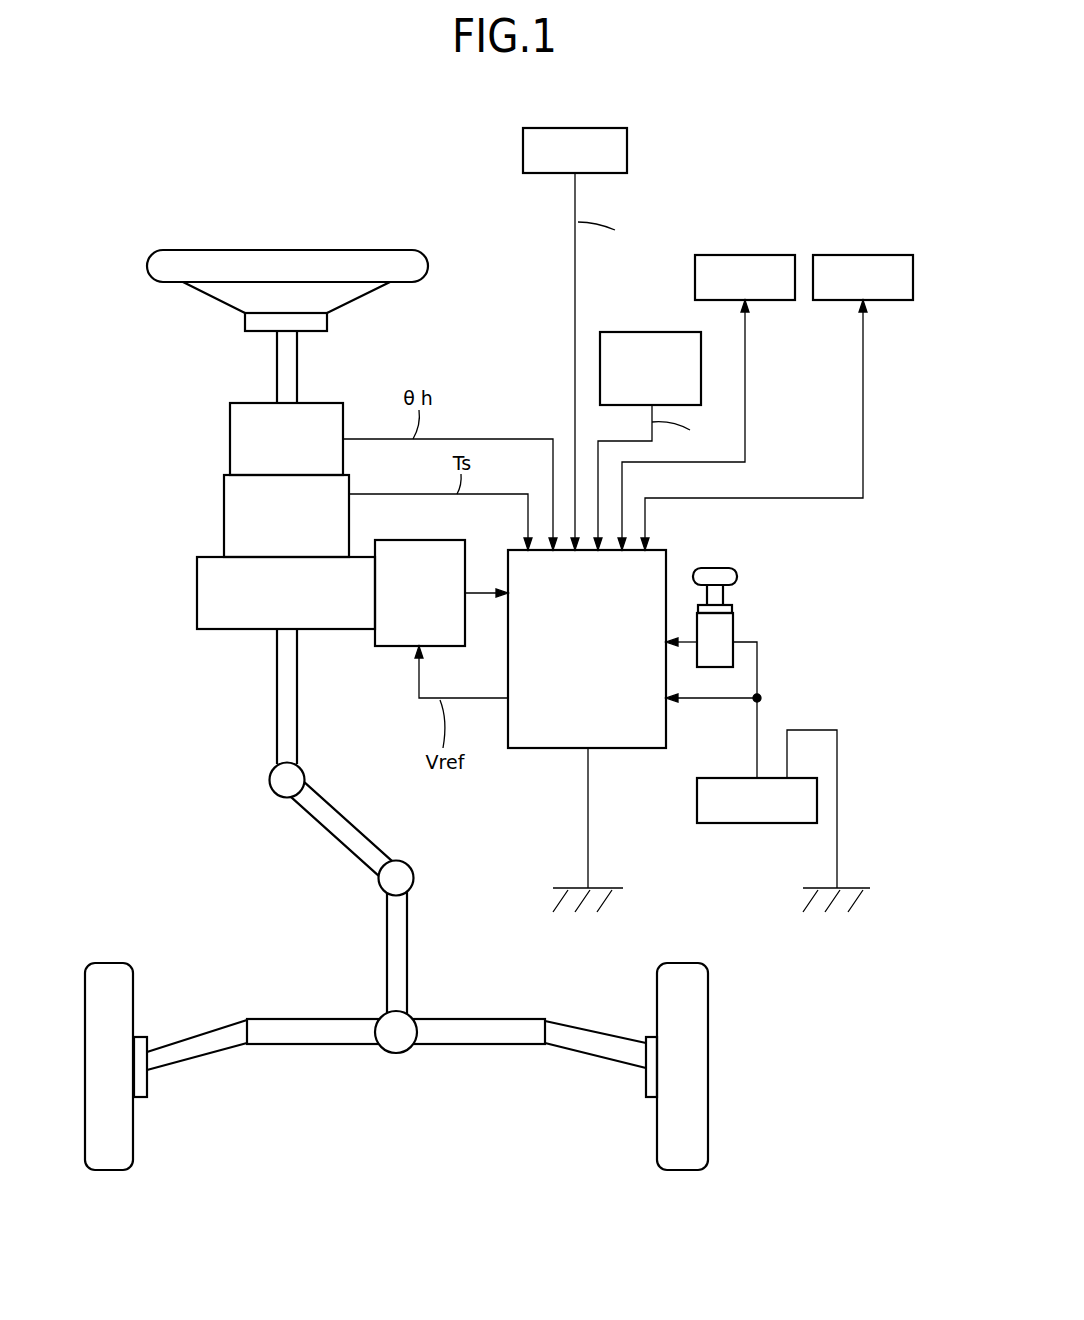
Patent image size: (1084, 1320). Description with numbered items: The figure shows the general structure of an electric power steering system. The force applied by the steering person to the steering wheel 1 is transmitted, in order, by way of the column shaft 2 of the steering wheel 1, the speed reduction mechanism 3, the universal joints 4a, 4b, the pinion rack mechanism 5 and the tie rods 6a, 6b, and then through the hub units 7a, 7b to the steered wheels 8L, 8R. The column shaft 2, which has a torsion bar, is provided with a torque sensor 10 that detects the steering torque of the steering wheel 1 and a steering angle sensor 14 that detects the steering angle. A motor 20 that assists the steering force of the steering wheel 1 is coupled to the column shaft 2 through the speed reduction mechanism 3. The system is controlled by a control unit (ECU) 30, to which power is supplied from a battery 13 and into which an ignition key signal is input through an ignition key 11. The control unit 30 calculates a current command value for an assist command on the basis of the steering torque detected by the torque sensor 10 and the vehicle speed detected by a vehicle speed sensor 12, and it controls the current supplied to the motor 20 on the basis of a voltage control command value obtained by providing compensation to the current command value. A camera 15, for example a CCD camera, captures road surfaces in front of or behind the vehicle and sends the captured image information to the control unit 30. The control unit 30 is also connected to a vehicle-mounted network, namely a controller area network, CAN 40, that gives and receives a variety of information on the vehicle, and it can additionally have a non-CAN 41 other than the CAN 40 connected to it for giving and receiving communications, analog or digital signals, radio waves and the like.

The steering wheel 1 is at (390, 250).
The column shaft 2 is at (299, 363).
The speed reduction mechanism 3 is at (197, 572).
The universal joint 4a is at (270, 778).
The universal joint 4b is at (381, 892).
The pinion rack mechanism 5 is at (413, 1012).
The tie rod 6a is at (211, 1030).
The tie rod 6b is at (608, 1040).
The hub unit 7a is at (149, 1083).
The hub unit 7b is at (644, 1083).
The steered wheel 8L is at (134, 1135).
The steered wheel 8R is at (656, 1135).
The torque sensor 10 is at (224, 510).
The ignition key 11 is at (740, 576).
The vehicle speed sensor 12 is at (620, 332).
The battery 13 is at (697, 800).
The steering angle sensor 14 is at (230, 428).
The camera 15 is at (611, 128).
The motor 20 is at (412, 540).
The control unit (ECU) 30 is at (668, 556).
The controller area network (CAN) 40 is at (893, 255).
The non-CAN 41 is at (774, 255).